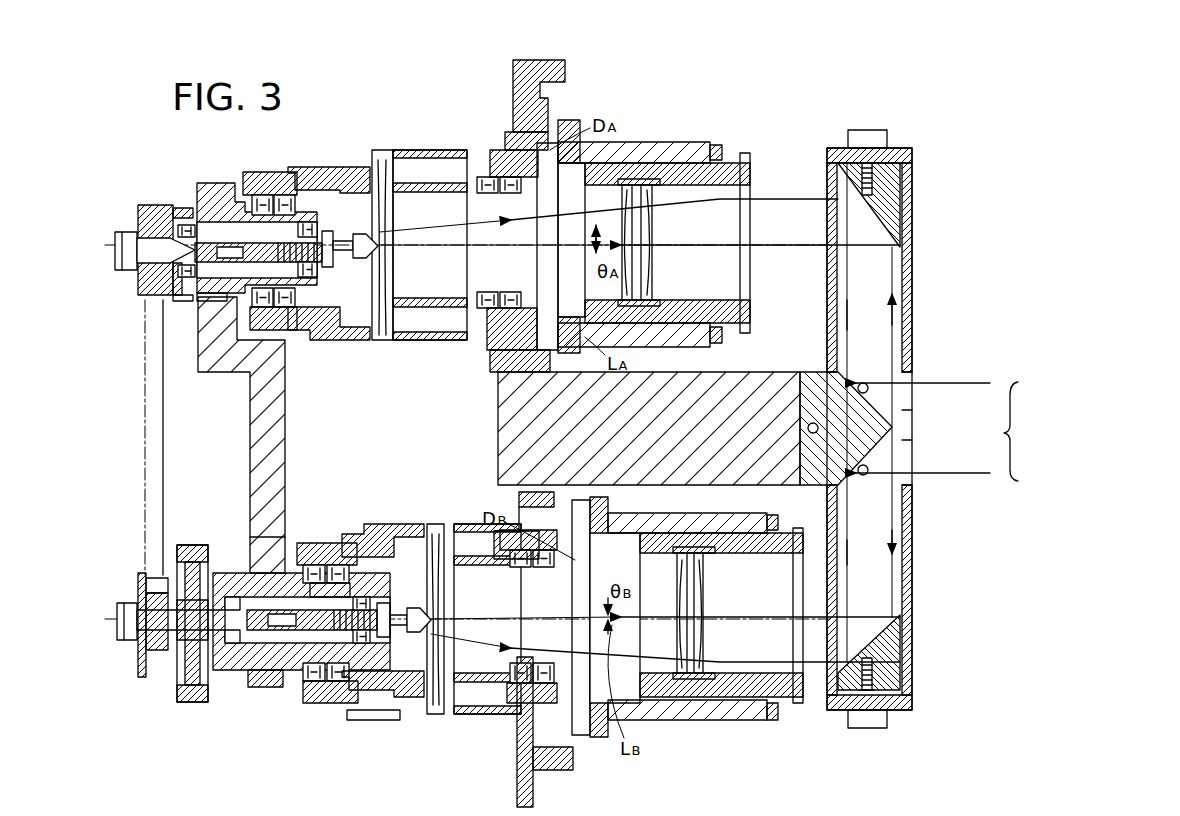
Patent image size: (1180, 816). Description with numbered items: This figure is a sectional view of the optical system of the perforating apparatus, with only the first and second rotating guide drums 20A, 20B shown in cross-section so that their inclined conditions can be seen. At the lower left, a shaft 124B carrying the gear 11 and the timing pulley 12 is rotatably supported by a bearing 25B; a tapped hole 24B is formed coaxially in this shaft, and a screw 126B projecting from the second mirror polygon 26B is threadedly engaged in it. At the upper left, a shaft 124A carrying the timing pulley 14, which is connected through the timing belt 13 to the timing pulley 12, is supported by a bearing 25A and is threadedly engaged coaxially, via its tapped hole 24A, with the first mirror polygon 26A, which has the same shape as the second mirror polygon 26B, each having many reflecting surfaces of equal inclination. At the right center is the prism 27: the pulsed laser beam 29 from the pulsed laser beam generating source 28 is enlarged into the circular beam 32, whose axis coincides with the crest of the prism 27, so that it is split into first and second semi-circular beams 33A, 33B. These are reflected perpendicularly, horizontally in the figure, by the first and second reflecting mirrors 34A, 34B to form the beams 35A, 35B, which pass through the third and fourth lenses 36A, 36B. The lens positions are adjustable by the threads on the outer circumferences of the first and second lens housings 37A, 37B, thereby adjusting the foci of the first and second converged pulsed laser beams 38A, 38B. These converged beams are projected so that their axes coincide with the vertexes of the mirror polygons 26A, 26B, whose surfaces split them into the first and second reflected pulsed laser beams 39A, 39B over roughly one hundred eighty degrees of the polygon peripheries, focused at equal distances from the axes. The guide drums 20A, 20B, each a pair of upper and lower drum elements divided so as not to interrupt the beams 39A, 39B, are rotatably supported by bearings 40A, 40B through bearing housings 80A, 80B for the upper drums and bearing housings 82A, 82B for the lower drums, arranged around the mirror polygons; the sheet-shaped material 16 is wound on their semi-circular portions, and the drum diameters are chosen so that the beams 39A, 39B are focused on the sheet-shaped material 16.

The gear 11 is at (194, 702).
The timing pulley 12 is at (152, 676).
The timing belt 13 is at (148, 433).
The timing pulley 14 is at (176, 300).
The sheet-shaped material 16 is at (432, 150).
The first rotating guide drum 20A is at (362, 262).
The second rotating guide drum 20B is at (415, 606).
The tapped hole 24A is at (312, 262).
The tapped hole 24B is at (352, 646).
The bearing 25A is at (205, 300).
The bearing 25B is at (340, 582).
The first mirror polygon 26A is at (332, 167).
The second mirror polygon 26B is at (395, 545).
The prism 27 is at (862, 470).
The pulsed laser beam generating source 28 is at (1090, 439).
The pulsed laser beam 29 is at (912, 268).
The enlarged pulsed laser beam 32 is at (966, 478).
The first pulsed laser beam 33A is at (850, 335).
The second pulsed laser beam 33B is at (850, 550).
The first reflecting mirror 34A is at (882, 190).
The second reflecting mirror 34B is at (882, 660).
The laser beam 35A is at (763, 245).
The laser beam 35B is at (815, 660).
The third lens 36A is at (640, 165).
The fourth lens 36B is at (707, 700).
The first lens housing 37A is at (736, 158).
The second lens housing 37B is at (786, 698).
The first converged pulsed laser beam 38A is at (386, 152).
The second converged pulsed laser beam 38B is at (443, 714).
The first reflected pulsed laser beam 39A is at (380, 158).
The second reflected pulsed laser beam 39B is at (436, 715).
The bearing 40A is at (285, 192).
The bearing 40B is at (332, 703).
The bearing housing 80A is at (514, 95).
The bearing housing 80B is at (516, 505).
The bearing housing 82A is at (200, 212).
The bearing housing 82B is at (248, 572).
The shaft 124A is at (125, 262).
The shaft 124B is at (118, 620).
The screw 126B is at (372, 721).